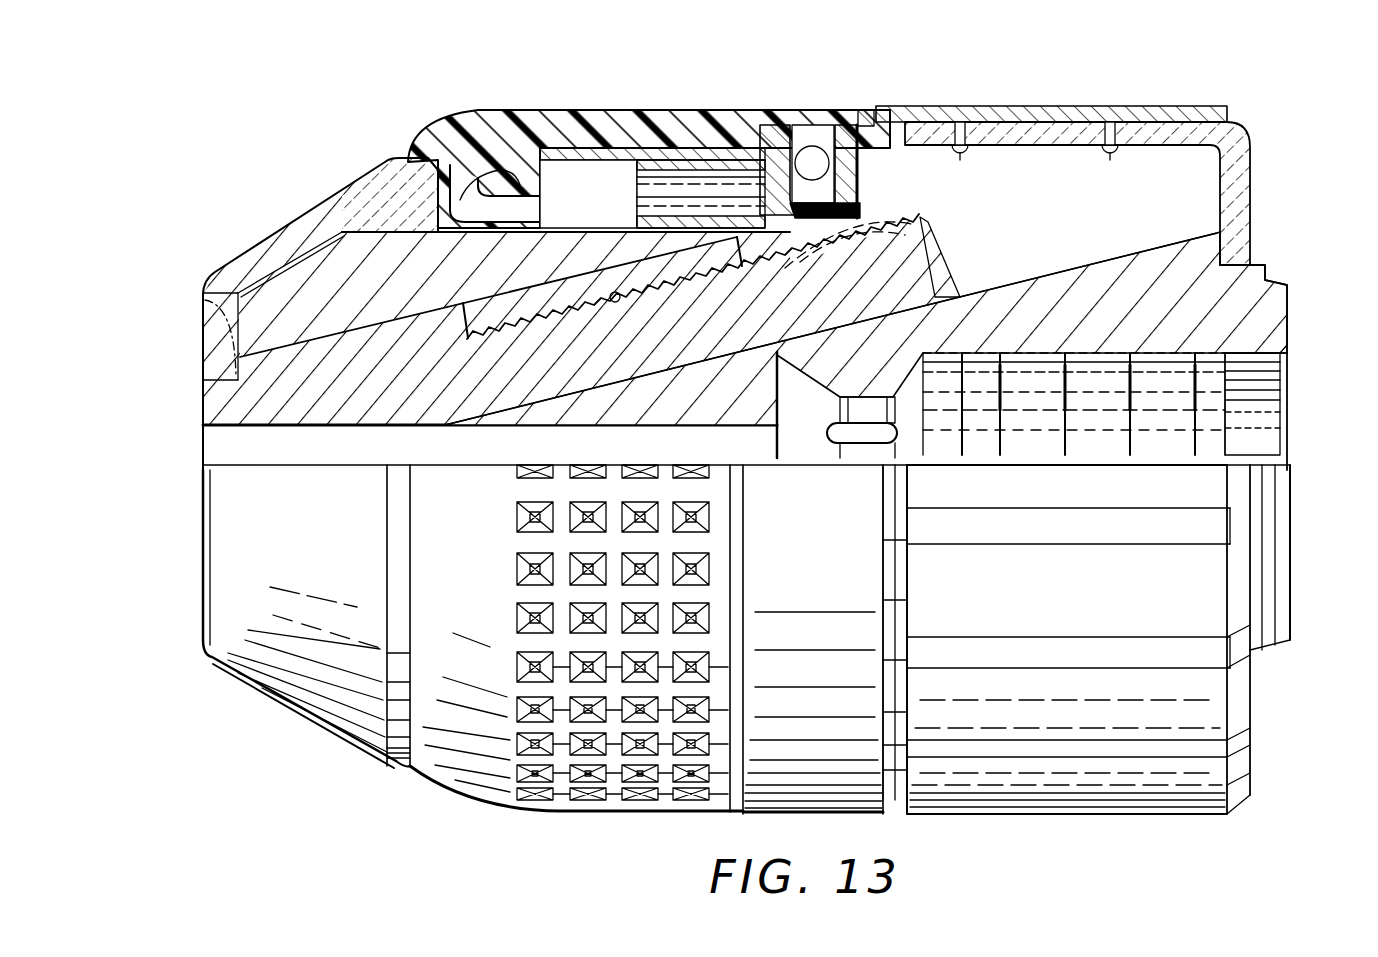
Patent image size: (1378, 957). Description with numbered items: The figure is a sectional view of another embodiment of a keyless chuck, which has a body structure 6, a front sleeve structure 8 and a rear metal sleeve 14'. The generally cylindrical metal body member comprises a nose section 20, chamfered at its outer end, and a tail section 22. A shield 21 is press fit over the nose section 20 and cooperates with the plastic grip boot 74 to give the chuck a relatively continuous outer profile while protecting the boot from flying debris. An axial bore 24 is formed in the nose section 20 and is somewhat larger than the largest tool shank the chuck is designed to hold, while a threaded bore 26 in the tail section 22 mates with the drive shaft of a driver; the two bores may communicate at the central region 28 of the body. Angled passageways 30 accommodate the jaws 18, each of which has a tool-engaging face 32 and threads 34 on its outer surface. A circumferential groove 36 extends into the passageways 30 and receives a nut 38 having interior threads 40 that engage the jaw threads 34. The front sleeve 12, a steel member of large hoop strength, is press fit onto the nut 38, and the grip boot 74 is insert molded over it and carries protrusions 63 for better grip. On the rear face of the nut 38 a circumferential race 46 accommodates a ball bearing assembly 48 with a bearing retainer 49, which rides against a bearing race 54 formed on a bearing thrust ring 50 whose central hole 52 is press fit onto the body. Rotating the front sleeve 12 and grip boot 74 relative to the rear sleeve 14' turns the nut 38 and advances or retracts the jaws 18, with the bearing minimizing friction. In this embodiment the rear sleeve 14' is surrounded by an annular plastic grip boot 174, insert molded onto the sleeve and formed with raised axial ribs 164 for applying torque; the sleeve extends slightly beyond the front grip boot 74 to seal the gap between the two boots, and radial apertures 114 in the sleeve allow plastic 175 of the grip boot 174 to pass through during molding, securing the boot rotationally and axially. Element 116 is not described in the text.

The body structure 6 is at (288, 176).
The front sleeve structure 8 is at (605, 90).
The front sleeve 12 is at (562, 112).
The rear metal sleeve 14' is at (1105, 193).
The jaws 18 is at (345, 380).
The nose section 20 is at (236, 288).
The shield 21 is at (262, 262).
The tail section 22 is at (1258, 290).
The axial bore 24 is at (748, 435).
The threaded bore 26 is at (1220, 423).
The central region 28 is at (865, 453).
The passageways 30 is at (565, 300).
The tool-engaging face 32 is at (284, 424).
The threads 34 is at (618, 302).
The circumferential groove 36 is at (907, 218).
The nut 38 is at (766, 135).
The interior threads 40 is at (885, 215).
The circumferential race 46 is at (740, 200).
The ball bearing assembly 48 is at (846, 125).
The bearing retainer 49 is at (806, 160).
The bearing thrust ring 50 is at (895, 107).
The central hole 52 is at (861, 172).
The bearing race 54 is at (868, 110).
The protrusions 63 is at (515, 570).
The grip boot 74 is at (470, 150).
The radial apertures 114 is at (968, 150).
The nut body 116 is at (362, 278).
The raised axial ribs 164 is at (1048, 660).
The grip boot 174 is at (1125, 122).
The plastic 175 is at (960, 152).